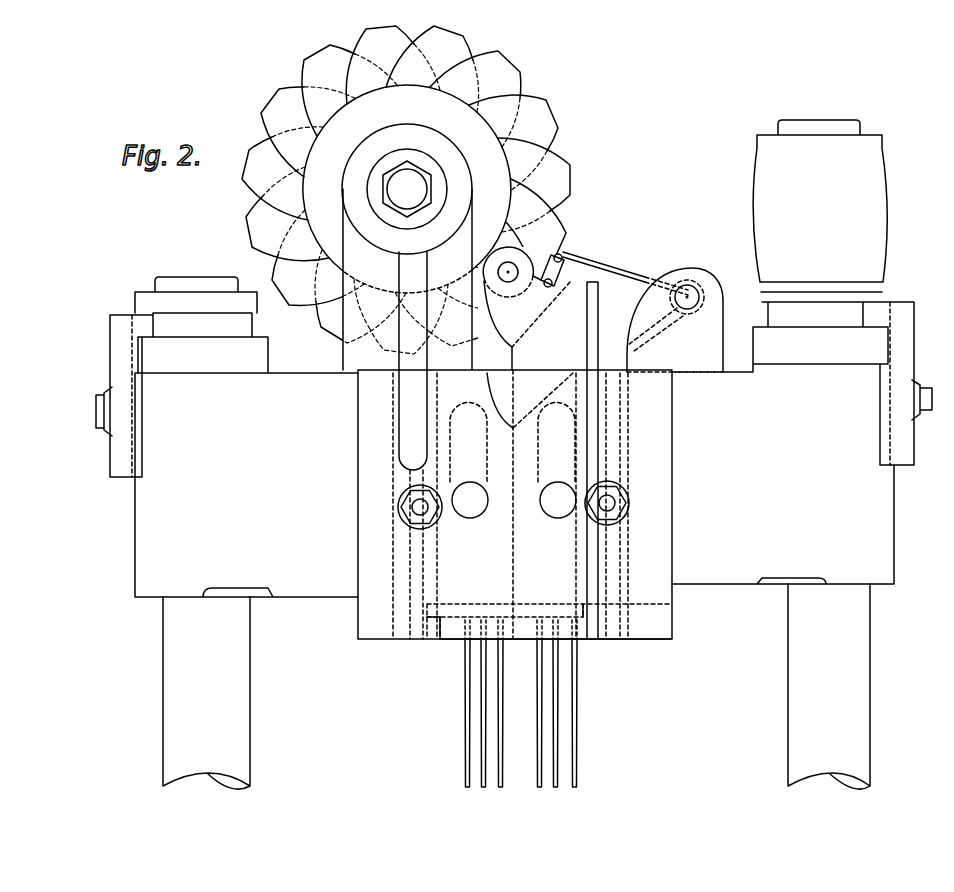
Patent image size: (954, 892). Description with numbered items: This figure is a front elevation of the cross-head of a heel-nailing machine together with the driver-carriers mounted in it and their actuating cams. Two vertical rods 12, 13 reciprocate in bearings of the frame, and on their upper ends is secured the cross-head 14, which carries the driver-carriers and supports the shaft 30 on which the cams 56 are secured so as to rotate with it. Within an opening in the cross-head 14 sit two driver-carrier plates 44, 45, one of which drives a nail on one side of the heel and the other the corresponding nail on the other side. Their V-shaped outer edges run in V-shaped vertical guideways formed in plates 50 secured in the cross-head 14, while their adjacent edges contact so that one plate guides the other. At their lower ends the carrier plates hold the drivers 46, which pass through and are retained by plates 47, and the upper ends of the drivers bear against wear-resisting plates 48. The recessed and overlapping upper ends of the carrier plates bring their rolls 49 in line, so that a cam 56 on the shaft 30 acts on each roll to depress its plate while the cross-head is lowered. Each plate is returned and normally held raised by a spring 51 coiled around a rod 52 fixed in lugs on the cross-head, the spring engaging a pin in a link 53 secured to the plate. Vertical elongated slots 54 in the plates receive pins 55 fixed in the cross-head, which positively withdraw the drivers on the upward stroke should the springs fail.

The vertical rod 12 is at (870, 643).
The vertical rod 13 is at (163, 700).
The cross-head 14 is at (883, 521).
The shaft 30 is at (407, 189).
The driver-carrier plate 44 is at (427, 622).
The driver-carrier plate 45 is at (590, 644).
The drivers 46 is at (579, 727).
The plates 47 is at (683, 606).
The wear-resisting plates 48 is at (535, 601).
The rolls 49 is at (523, 256).
The plates 50 is at (407, 577).
The spring 51 is at (618, 271).
The rod 52 is at (689, 290).
The link 53 is at (567, 256).
The vertical elongated slots 54 is at (573, 448).
The pins 55 is at (558, 512).
The cams 56 is at (543, 113).